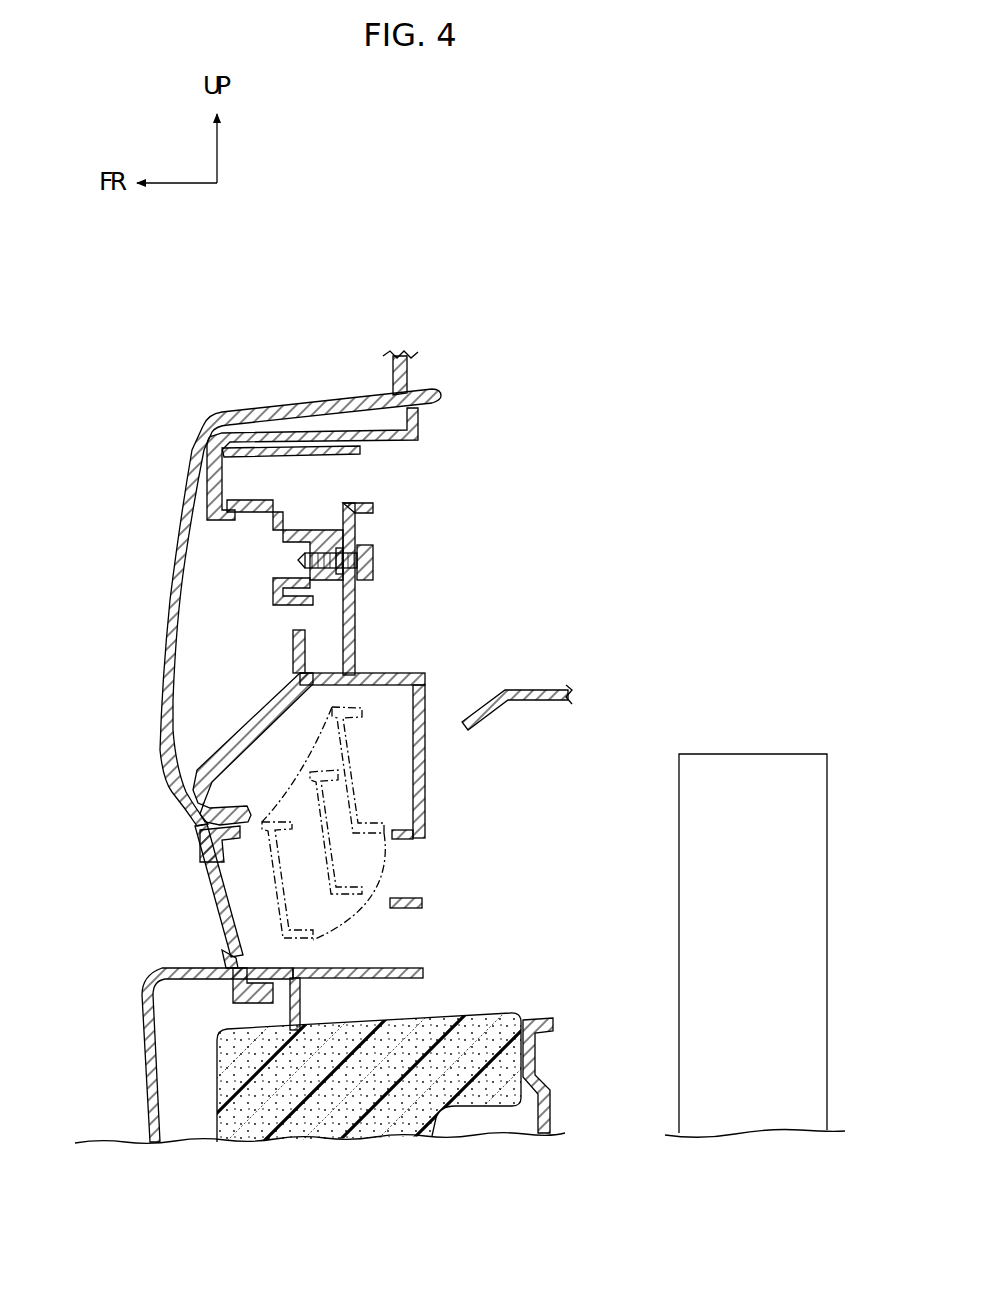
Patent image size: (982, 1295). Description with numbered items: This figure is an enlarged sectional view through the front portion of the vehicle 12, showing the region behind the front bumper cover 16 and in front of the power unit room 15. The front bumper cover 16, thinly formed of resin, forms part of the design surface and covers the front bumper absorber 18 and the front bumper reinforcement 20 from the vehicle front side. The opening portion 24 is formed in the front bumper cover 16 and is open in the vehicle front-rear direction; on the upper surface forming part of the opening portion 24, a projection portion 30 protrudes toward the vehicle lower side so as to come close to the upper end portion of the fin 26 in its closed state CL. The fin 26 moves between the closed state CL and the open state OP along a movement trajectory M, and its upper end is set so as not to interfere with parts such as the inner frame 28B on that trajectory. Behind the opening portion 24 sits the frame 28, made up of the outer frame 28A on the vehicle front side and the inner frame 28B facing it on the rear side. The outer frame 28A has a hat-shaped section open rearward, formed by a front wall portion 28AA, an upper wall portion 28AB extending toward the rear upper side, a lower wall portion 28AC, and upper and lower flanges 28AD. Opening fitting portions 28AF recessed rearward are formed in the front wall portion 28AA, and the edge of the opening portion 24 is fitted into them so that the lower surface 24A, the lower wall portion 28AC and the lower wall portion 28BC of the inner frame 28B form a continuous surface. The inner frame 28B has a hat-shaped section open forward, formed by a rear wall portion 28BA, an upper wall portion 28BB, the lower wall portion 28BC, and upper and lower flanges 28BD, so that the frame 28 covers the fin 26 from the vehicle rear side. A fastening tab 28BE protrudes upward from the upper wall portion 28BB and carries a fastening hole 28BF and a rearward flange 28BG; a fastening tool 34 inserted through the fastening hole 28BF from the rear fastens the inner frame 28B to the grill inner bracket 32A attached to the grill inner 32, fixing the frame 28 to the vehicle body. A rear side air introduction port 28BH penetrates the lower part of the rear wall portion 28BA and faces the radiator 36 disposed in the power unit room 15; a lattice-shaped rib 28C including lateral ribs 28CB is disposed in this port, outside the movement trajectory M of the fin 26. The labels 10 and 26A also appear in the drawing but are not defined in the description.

The vehicle side structure 10 is at (70, 812).
The vehicle 12 is at (108, 358).
The power unit room 15 is at (755, 553).
The front bumper cover 16 is at (178, 548).
The front bumper absorber 18 is at (486, 1030).
The front bumper reinforcement 20 is at (538, 1020).
The opening portion 24 is at (165, 1046).
The lower surface 24A is at (207, 972).
The fin 26 is at (150, 890).
The lower portion of reinforcement 26A is at (212, 912).
The frame 28 is at (452, 660).
The outer frame 28A is at (200, 762).
The front wall portion 28AA is at (198, 788).
The upper wall portion 28AB is at (255, 727).
The lower wall portion 28AC is at (228, 955).
The upper and lower flanges 28AD is at (296, 650).
The opening fitting portion 28AF is at (215, 798).
The inner frame 28B is at (427, 676).
The rear wall portion 28BA is at (427, 758).
The upper wall portion 28BB is at (398, 672).
The lower wall portion 28BC is at (345, 968).
The upper and lower flanges 28BD is at (355, 640).
The fastening tab 28BE is at (315, 592).
The fastening hole 28BF is at (356, 556).
The flange 28BG is at (372, 506).
The rear side air introduction port 28BH is at (420, 848).
The rib 28C is at (410, 822).
The lateral rib 28CB is at (395, 843).
The projection portion 30 is at (200, 830).
The grill inner 32 is at (383, 440).
The grill inner bracket 32A is at (272, 500).
The fastening tool 34 is at (365, 566).
The radiator 36 is at (752, 773).
The movement trajectory M is at (370, 905).
The open state OP is at (368, 777).
The closed state CL is at (185, 892).